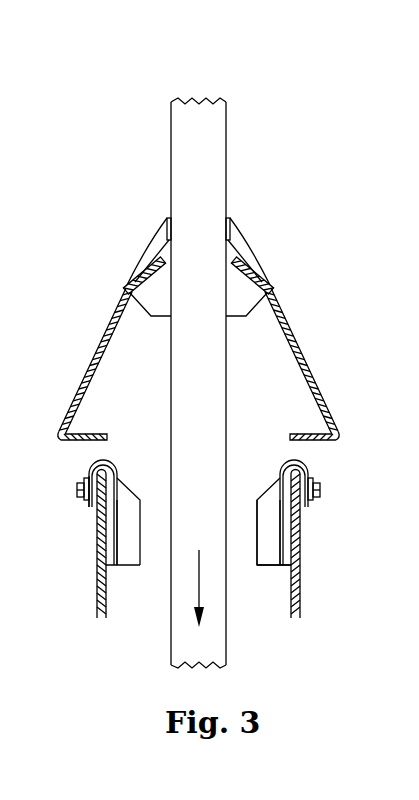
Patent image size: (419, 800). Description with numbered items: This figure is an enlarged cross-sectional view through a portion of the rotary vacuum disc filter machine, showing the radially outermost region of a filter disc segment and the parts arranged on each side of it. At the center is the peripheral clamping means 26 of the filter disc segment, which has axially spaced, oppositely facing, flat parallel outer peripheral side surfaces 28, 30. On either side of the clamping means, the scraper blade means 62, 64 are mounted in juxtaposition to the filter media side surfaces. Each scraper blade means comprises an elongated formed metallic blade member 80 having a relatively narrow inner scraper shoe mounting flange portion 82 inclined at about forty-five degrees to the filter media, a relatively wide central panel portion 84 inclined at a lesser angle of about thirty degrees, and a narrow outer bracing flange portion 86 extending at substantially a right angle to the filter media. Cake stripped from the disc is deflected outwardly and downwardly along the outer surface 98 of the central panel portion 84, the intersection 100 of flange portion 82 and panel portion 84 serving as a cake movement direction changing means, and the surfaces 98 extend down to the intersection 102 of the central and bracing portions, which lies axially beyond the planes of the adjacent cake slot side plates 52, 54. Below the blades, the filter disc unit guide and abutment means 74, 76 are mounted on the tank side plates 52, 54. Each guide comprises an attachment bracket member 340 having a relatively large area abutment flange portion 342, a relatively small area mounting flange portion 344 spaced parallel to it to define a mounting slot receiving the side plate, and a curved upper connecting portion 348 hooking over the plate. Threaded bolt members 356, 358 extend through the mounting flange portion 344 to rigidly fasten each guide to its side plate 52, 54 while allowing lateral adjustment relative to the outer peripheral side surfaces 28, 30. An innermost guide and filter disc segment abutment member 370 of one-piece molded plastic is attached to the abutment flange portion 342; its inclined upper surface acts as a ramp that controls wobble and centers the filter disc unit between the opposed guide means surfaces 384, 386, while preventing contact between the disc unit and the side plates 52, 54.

The peripheral clamping means 26 is at (236, 90).
The outer peripheral side surface 28 is at (171, 133).
The outer peripheral side surface 30 is at (226, 133).
The scraper blade means 62 is at (109, 306).
The scraper blade means 64 is at (314, 320).
The inner scraper shoe mounting flange portion 82 is at (267, 272).
The intersection of flange portion and panel portion 100 is at (268, 292).
The central panel portion 84 is at (292, 330).
The outer surface of central portion 98 is at (300, 348).
The blade member 80 is at (72, 432).
The outer bracing flange portion 86 is at (305, 434).
The intersection of wall portions 102 is at (338, 437).
The attachment bracket member 340 is at (97, 543).
The curved upper connecting portion 348 is at (106, 463).
The mounting flange portion 344 is at (93, 503).
The abutment flange portion 342 is at (113, 538).
The threaded bolt member 356 is at (80, 493).
The guide means surface 384 is at (143, 530).
The filter disc unit guide and abutment means 74 is at (122, 590).
The side plate means 52 is at (100, 613).
The guide and filter disc segment abutment member 370 is at (267, 500).
The guide means surface 386 is at (257, 540).
The filter disc unit guide and abutment means 76 is at (283, 585).
The threaded bolt member 358 is at (320, 491).
The side plate means 54 is at (300, 598).